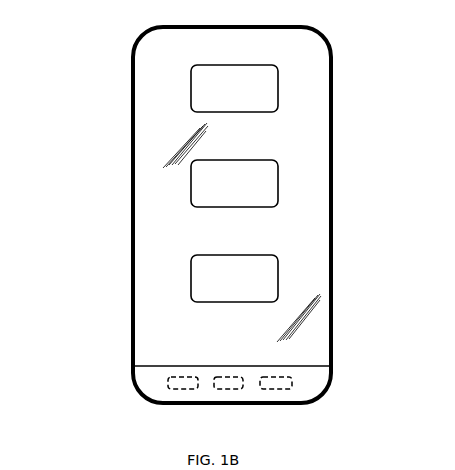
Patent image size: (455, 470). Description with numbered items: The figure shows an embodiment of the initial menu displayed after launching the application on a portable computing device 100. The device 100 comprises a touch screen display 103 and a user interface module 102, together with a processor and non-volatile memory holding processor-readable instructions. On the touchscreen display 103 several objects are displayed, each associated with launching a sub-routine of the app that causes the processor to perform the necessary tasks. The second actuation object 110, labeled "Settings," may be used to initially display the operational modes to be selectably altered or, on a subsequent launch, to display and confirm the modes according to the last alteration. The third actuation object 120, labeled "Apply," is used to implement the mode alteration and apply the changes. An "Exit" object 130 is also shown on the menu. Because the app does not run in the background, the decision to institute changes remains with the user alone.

The portable computing device 100 is at (131, 62).
The user interface module 102 is at (167, 390).
The touch screen display 103 is at (167, 203).
The second actuation object 110 is at (268, 80).
The third actuation object 120 is at (267, 193).
The Exit button 130 is at (280, 277).